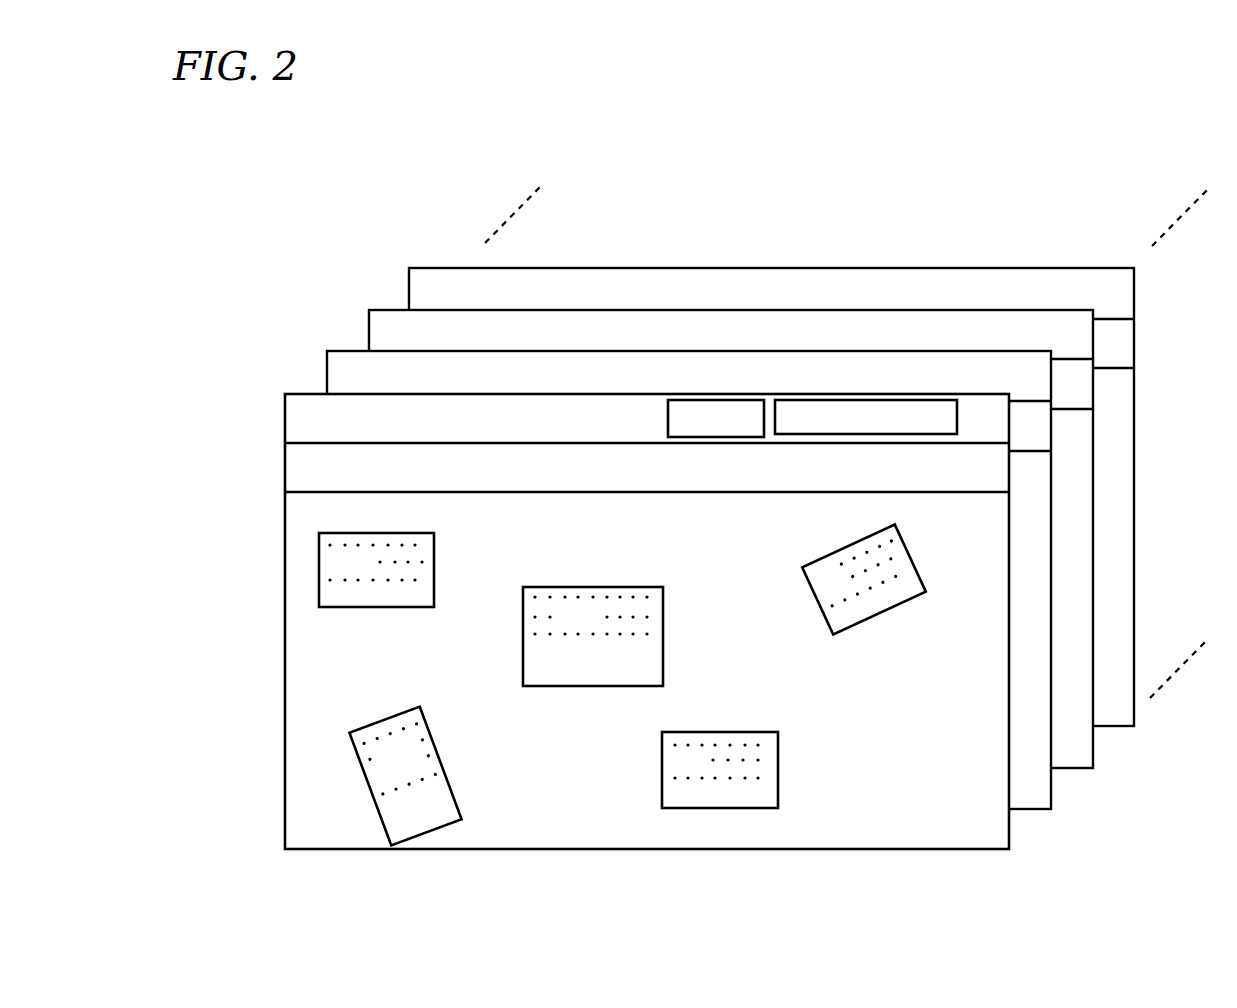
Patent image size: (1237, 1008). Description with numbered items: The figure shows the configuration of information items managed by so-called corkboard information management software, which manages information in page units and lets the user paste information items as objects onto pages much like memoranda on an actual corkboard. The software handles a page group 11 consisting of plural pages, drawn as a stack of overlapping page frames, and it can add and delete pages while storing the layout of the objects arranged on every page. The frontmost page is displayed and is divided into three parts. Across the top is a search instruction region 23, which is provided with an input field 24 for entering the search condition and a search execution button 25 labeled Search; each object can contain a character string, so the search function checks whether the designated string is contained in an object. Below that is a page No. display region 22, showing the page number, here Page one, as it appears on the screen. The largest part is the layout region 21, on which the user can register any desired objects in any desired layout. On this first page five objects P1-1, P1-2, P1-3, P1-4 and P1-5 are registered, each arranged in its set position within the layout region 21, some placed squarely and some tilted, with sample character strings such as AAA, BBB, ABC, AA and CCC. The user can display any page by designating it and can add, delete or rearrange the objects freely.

The page group 11 is at (507, 150).
The layout region 21 is at (285, 631).
The page No. display region 22 is at (285, 469).
The search instruction region 23 is at (285, 419).
The input field 24 is at (957, 412).
The search execution button 25 is at (718, 400).
The object P1-1 is at (435, 562).
The object P1-2 is at (430, 737).
The object P1-3 is at (663, 612).
The object P1-4 is at (908, 549).
The object P1-5 is at (778, 761).